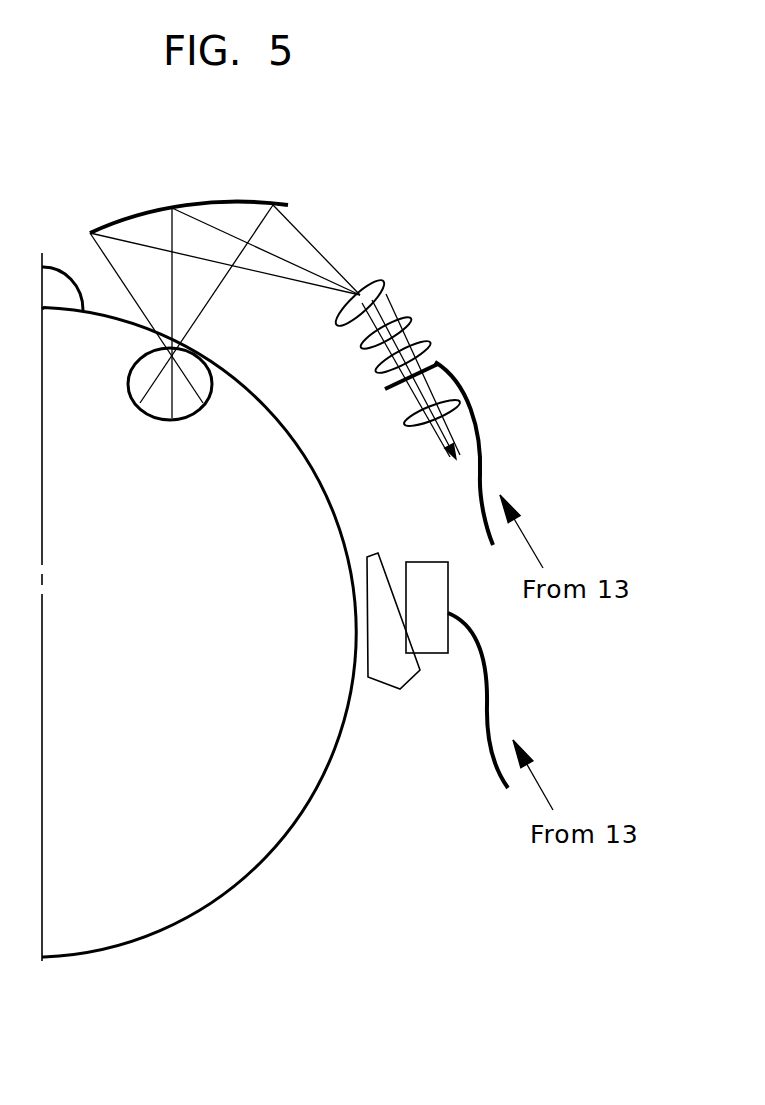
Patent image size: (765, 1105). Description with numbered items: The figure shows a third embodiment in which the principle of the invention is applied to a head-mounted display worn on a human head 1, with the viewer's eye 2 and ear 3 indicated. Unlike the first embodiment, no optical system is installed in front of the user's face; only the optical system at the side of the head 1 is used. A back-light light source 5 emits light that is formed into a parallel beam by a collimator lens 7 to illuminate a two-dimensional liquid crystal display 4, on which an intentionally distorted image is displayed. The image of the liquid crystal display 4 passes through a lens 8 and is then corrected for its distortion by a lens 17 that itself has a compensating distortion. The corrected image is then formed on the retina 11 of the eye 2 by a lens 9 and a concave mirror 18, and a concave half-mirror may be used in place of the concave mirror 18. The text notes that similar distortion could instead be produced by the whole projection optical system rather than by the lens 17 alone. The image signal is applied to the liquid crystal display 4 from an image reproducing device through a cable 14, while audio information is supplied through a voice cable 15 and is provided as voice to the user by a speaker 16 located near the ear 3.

The human head 1 is at (230, 875).
The eye 2 is at (203, 362).
The ear 3 is at (382, 580).
The liquid crystal display 4 is at (440, 365).
The back-light light source 5 is at (477, 430).
The collimator lens 7 is at (460, 400).
The lens 8 is at (423, 342).
The lens 9 is at (378, 287).
The retina 11 is at (203, 405).
The cable 14 is at (478, 467).
The voice cable 15 is at (488, 700).
The speaker 16 is at (432, 560).
The lens 17 is at (400, 315).
The concave mirror 18 is at (220, 200).